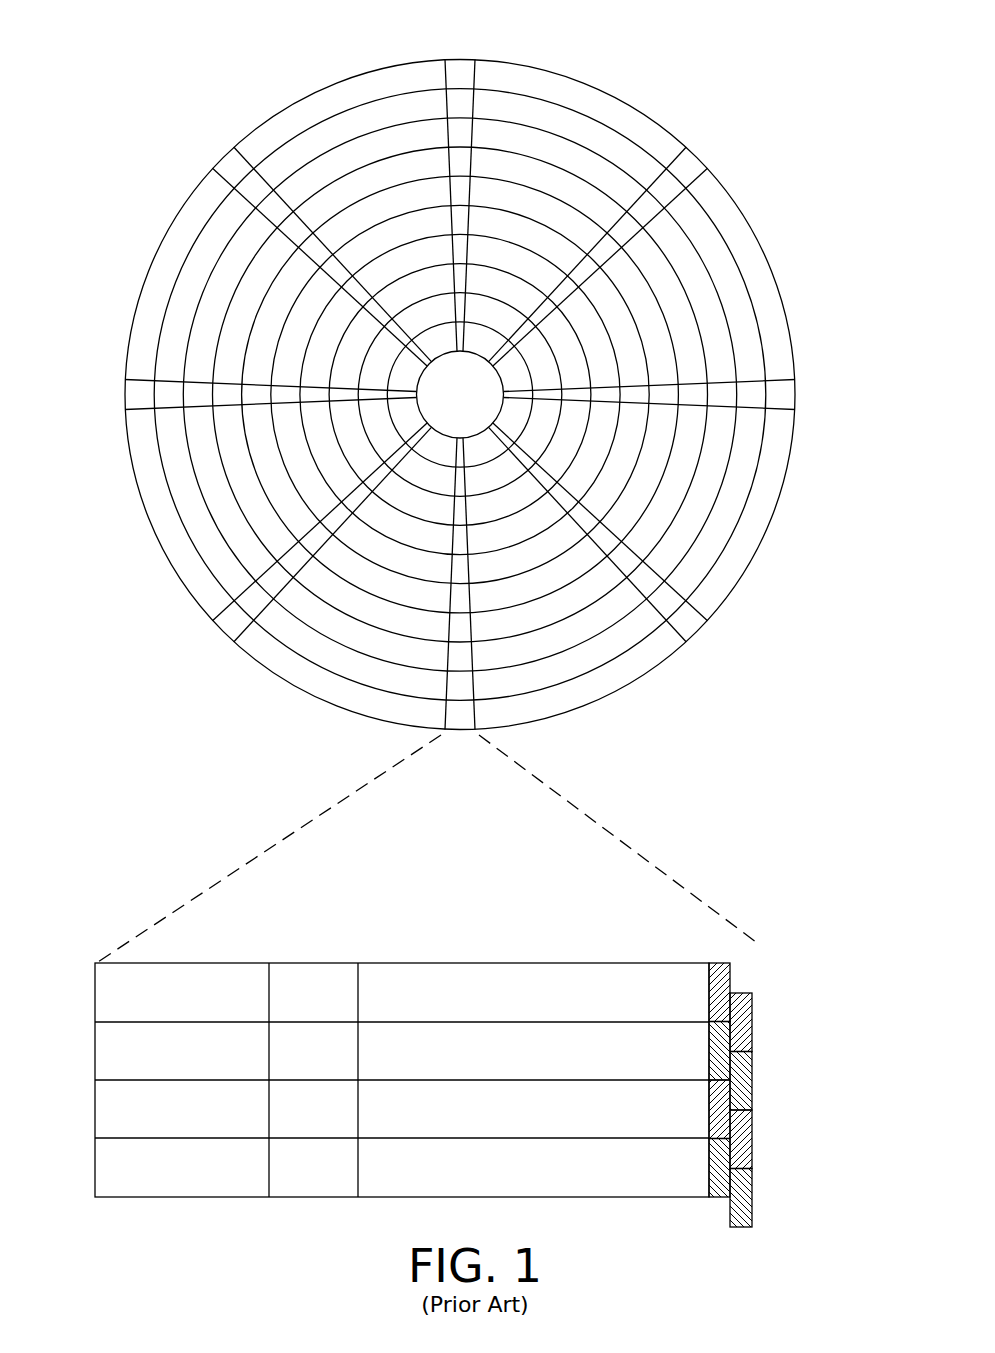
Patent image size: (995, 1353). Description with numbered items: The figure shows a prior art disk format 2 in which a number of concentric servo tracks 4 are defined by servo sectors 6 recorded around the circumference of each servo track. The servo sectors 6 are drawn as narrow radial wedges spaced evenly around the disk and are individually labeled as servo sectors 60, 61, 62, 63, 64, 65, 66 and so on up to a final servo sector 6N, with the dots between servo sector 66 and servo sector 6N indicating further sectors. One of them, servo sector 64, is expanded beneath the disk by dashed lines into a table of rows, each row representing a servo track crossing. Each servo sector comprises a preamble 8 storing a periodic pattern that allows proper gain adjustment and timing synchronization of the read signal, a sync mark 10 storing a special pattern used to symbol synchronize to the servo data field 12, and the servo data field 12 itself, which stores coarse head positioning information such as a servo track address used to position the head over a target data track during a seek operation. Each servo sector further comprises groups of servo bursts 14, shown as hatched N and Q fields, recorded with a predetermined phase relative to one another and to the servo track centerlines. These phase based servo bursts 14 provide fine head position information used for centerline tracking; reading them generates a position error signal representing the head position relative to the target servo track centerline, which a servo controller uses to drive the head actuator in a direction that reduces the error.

The disk format 2 is at (460, 369).
The servo tracks 4 is at (574, 126).
The servo sectors 6 is at (461, 407).
The servo sector 60 is at (460, 69).
The servo sector 61 is at (688, 166).
The servo sector 62 is at (788, 395).
The servo sector 63 is at (690, 628).
The servo sector 64 is at (311, 810).
The servo sector 65 is at (227, 626).
The servo sector 66 is at (130, 395).
The servo sector 6N is at (230, 162).
The preamble 8 is at (191, 963).
The sync mark 10 is at (316, 963).
The servo data field 12 is at (521, 963).
The servo bursts 14 is at (746, 962).